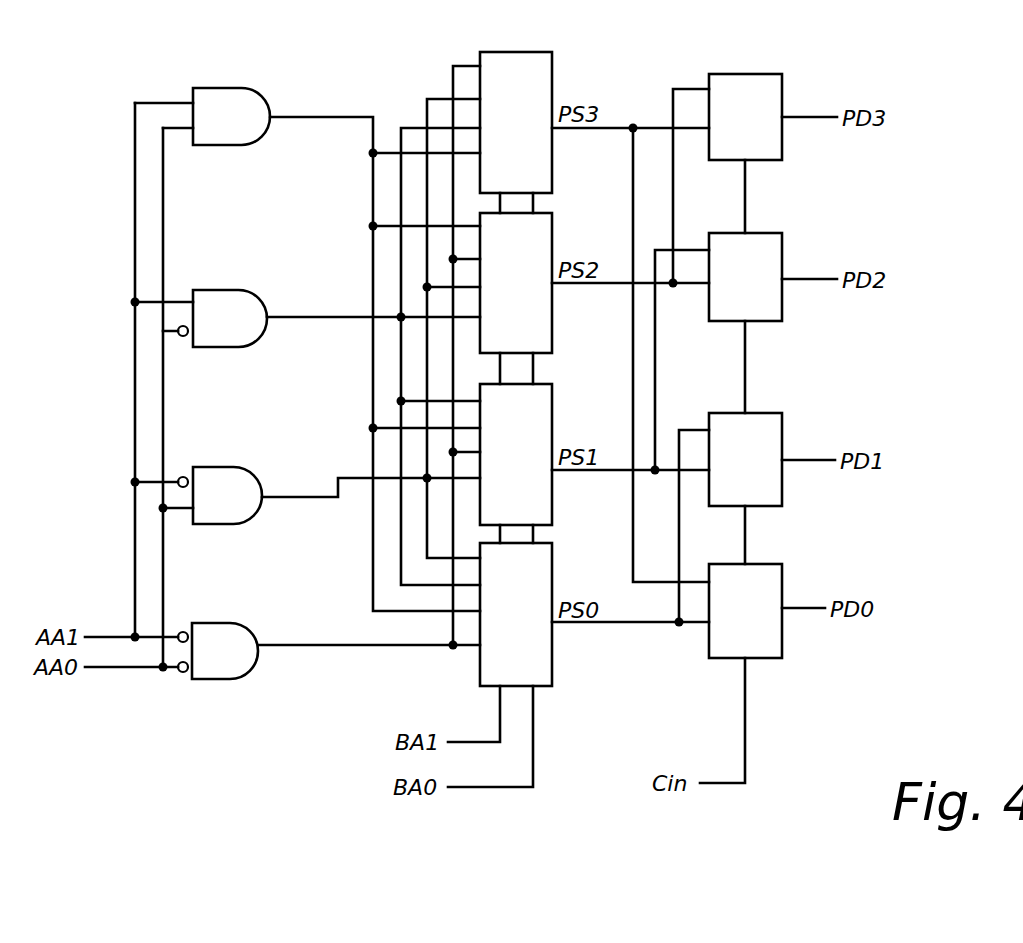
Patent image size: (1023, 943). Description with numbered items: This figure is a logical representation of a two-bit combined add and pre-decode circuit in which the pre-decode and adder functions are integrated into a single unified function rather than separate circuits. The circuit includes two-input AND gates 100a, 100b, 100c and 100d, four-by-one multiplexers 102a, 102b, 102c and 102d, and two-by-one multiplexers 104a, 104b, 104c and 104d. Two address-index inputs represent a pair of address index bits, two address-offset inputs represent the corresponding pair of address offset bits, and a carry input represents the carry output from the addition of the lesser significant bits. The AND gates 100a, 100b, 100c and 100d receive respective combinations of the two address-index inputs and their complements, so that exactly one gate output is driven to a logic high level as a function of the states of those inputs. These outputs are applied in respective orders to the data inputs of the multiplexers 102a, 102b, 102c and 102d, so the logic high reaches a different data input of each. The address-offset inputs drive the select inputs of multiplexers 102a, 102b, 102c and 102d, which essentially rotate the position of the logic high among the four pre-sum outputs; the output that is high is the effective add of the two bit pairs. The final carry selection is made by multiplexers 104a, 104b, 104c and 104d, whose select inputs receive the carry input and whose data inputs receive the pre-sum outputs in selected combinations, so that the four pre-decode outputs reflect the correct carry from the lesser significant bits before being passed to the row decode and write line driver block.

The two-input AND gate 100a is at (197, 621).
The two-input AND gate 100b is at (197, 465).
The two-input AND gate 100c is at (203, 288).
The two-input AND gate 100d is at (218, 86).
The 4×1 multiplexer 102a is at (540, 541).
The 4×1 multiplexer 102b is at (540, 382).
The 4×1 multiplexer 102c is at (545, 211).
The 4×1 multiplexer 102d is at (530, 50).
The 2×1 multiplexer 104a is at (755, 562).
The 2×1 multiplexer 104b is at (757, 411).
The 2×1 multiplexer 104c is at (765, 231).
The 2×1 multiplexer 104d is at (755, 72).